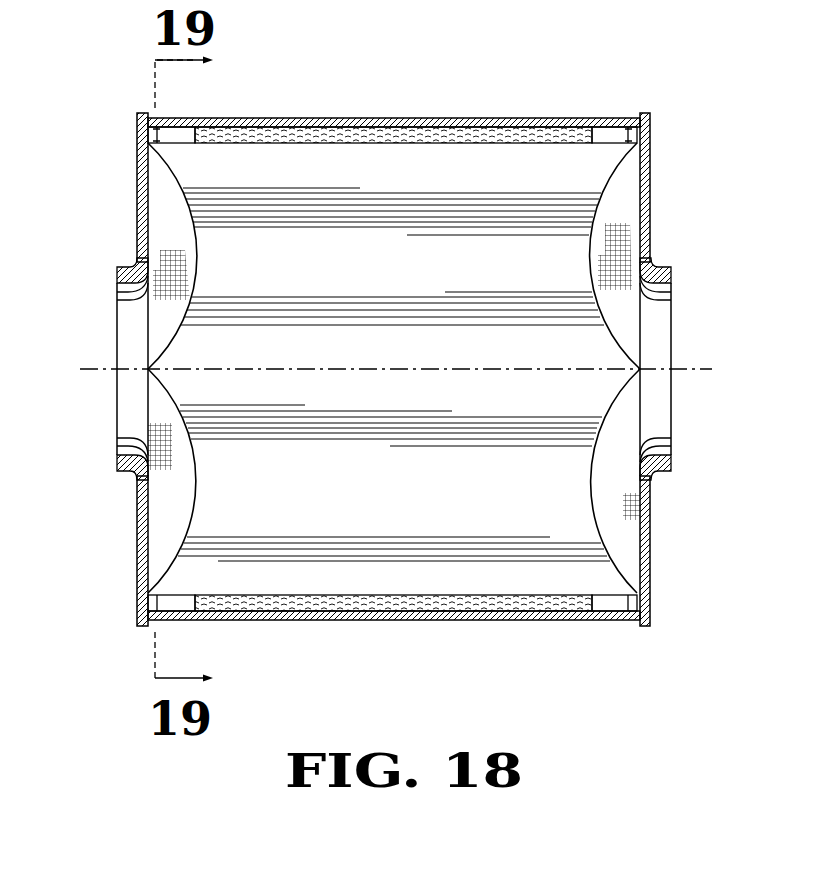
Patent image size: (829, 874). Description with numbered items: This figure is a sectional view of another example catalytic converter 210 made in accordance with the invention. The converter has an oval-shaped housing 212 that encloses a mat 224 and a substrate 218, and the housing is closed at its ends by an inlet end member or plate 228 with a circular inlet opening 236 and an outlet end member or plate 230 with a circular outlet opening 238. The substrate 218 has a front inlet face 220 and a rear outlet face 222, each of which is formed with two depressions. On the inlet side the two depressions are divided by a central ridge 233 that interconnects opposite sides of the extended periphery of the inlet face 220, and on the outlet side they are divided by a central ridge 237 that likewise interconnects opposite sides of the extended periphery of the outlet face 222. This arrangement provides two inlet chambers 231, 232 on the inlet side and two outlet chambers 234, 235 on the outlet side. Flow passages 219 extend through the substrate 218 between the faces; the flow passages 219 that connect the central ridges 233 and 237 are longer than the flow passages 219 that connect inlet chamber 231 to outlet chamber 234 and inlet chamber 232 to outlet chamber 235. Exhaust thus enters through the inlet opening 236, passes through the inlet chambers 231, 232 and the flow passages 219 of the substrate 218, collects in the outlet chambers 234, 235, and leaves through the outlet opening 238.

The catalytic converter 210 is at (396, 329).
The housing 212 is at (391, 116).
The substrate 218 is at (221, 143).
The flow passages 219 is at (304, 213).
The inlet face 220 is at (184, 518).
The outlet face 222 is at (616, 546).
The mat 224 is at (432, 126).
The inlet end member 228 is at (135, 198).
The outlet end member 230 is at (655, 200).
The inlet chamber 231 is at (160, 312).
The inlet chamber 232 is at (163, 412).
The central ridge 233 is at (148, 369).
The outlet chamber 234 is at (616, 213).
The outlet chamber 235 is at (625, 415).
The inlet opening 236 is at (117, 450).
The central ridge 237 is at (640, 369).
The outlet opening 238 is at (672, 443).